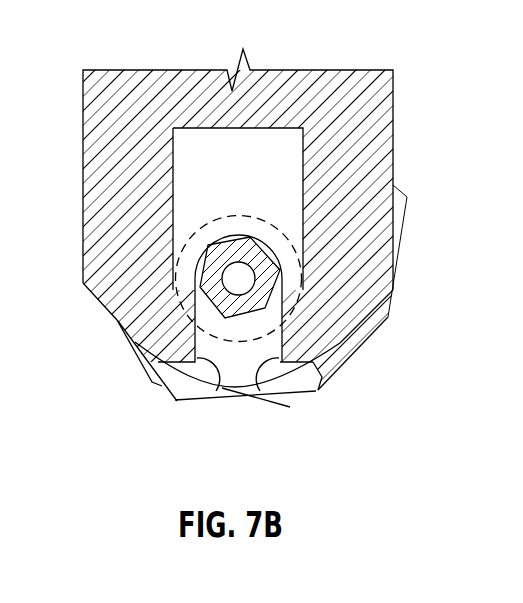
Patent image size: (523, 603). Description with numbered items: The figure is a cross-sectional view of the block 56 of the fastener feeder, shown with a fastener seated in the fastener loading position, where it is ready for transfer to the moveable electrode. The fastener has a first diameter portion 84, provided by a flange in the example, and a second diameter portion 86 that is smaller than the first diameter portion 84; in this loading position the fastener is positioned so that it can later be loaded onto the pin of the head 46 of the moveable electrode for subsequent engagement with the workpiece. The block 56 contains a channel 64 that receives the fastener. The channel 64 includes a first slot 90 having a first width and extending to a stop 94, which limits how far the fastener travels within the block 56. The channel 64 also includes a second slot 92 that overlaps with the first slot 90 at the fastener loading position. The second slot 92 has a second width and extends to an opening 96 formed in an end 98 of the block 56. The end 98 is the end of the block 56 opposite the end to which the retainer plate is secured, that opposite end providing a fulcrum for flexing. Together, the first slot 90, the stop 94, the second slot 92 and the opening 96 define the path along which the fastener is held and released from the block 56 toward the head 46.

The head 46 is at (287, 387).
The block 56 is at (386, 110).
The channel 64 is at (268, 152).
The first diameter portion 84 is at (283, 234).
The second diameter portion 86 is at (282, 286).
The first slot 90 is at (190, 143).
The second slot 92 is at (283, 400).
The stop 94 is at (195, 292).
The opening 96 is at (212, 400).
The end 98 is at (314, 374).